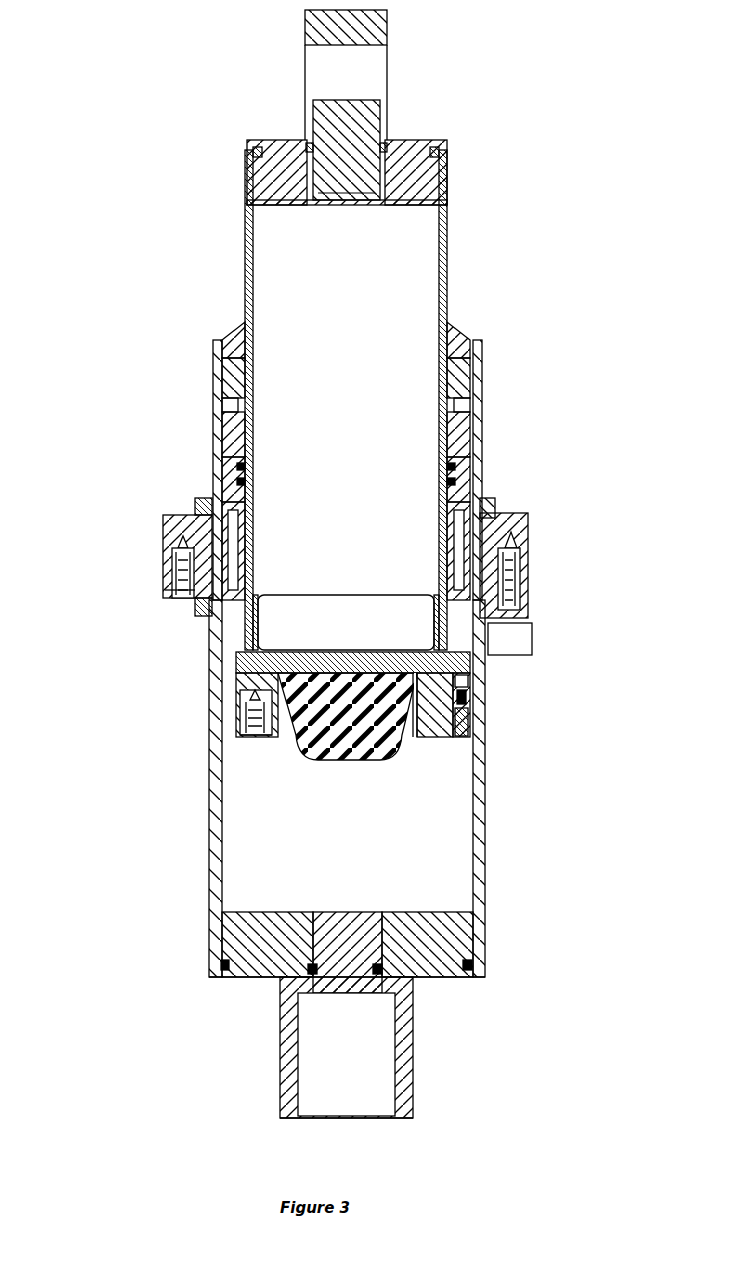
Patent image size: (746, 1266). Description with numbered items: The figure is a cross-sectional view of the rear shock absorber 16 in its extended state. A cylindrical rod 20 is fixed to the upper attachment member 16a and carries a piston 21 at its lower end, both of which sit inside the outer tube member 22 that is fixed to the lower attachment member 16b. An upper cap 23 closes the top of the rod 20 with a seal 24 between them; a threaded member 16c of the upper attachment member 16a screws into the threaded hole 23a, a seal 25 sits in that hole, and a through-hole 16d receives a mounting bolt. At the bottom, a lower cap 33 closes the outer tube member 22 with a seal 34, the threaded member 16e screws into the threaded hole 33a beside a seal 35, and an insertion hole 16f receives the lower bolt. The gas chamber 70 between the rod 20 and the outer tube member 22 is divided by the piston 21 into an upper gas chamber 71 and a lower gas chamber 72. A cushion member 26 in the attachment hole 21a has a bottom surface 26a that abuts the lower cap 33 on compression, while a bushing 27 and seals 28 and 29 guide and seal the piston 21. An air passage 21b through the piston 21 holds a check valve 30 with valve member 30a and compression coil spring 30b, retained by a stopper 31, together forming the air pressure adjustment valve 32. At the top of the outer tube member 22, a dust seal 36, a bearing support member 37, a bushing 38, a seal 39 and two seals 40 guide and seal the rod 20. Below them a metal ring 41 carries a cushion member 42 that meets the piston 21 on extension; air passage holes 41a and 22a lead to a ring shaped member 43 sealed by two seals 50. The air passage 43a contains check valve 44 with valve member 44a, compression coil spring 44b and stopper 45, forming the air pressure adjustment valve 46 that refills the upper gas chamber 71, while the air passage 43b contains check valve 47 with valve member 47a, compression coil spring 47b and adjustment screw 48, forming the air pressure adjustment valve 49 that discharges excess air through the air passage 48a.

The rear shock absorber 16 is at (568, 253).
The upper attachment member 16a is at (374, 24).
The lower attachment member 16b is at (412, 1010).
The threaded member 16c is at (300, 158).
The through-hole 16d is at (318, 45).
The threaded member 16e is at (303, 935).
The insertion hole 16f is at (285, 1090).
The rod 20 is at (447, 250).
The piston 21 is at (303, 735).
The attachment hole 21a is at (417, 700).
The air passage 21b is at (235, 700).
The outer tube member 22 is at (485, 768).
The air passage hole 22a is at (462, 590).
The upper cap 23 is at (410, 152).
The threaded hole 23a is at (325, 160).
The seal 24 is at (447, 153).
The seal 25 is at (380, 150).
The cushion member 26 is at (325, 720).
The bottom surface 26a is at (352, 758).
The bushing 27 is at (466, 705).
The seal 28 is at (470, 735).
The seal 29 is at (480, 700).
The check valve 30 is at (188, 723).
The valve member 30a is at (248, 708).
The compression coil spring 30b is at (252, 735).
The stopper 31 is at (250, 742).
The air pressure adjustment valve 32 is at (172, 738).
The lower cap 33 is at (435, 963).
The threaded hole 33a is at (372, 928).
The seal 34 is at (483, 968).
The seal 35 is at (312, 985).
The dust seal 36 is at (468, 338).
The bearing support member 37 is at (470, 440).
The bushing 38 is at (470, 455).
The seal 39 is at (470, 392).
The seals 40 is at (466, 483).
The metal ring 41 is at (500, 523).
The air passage hole 41a is at (462, 552).
The cushion member 42 is at (470, 630).
The ring shaped member 43 is at (505, 540).
The air passage 43a is at (165, 538).
The air passage 43b is at (510, 545).
The check valve 44 is at (126, 567).
The valve member 44a is at (168, 556).
The compression coil spring 44b is at (168, 575).
The stopper 45 is at (168, 598).
The air pressure adjustment valve 46 is at (119, 566).
The check valve 47 is at (569, 586).
The valve member 47a is at (520, 565).
The compression coil spring 47b is at (517, 590).
The adjustment screw 48 is at (530, 640).
The air passage 48a is at (510, 650).
The air pressure adjustment valve 49 is at (578, 601).
The seals 50 is at (200, 615).
The gas chamber 70 is at (253, 246).
The upper gas chamber 71 is at (222, 505).
The lower gas chamber 72 is at (222, 806).